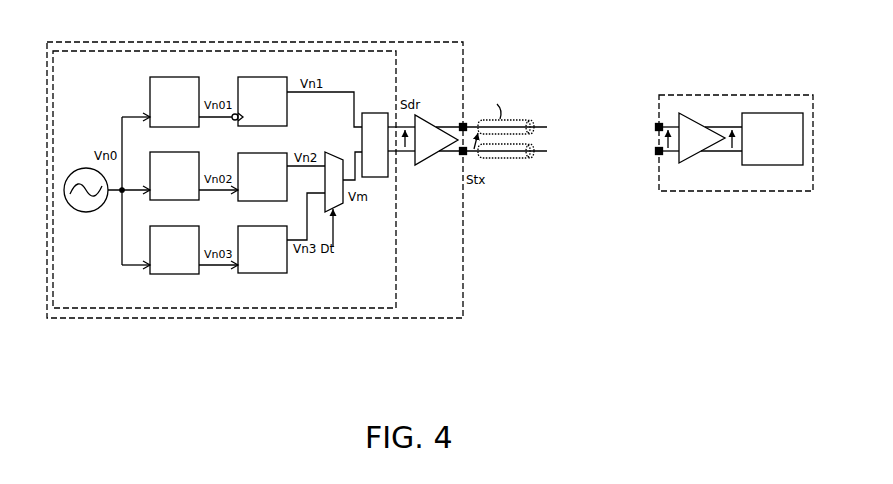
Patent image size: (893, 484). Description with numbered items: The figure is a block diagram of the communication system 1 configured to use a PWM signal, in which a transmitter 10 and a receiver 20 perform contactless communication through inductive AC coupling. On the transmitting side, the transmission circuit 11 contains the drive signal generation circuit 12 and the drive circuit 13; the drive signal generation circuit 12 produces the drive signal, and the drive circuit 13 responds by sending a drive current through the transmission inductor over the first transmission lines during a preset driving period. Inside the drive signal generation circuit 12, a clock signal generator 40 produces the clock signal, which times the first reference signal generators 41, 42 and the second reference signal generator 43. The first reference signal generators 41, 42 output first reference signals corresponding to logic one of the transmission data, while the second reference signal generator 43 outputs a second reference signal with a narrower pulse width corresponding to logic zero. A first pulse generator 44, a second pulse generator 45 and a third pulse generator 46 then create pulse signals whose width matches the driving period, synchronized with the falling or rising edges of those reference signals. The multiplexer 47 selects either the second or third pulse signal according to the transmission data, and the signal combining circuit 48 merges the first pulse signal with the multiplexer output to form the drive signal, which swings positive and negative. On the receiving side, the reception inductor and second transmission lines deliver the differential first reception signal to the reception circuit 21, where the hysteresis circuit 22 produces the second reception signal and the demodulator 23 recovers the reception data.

The communication system 1 is at (435, 396).
The transmitter 10 is at (506, 141).
The transmission circuit 11 is at (305, 42).
The drive signal generation circuit 12 is at (398, 284).
The drive circuit 13 is at (430, 156).
The receiver 20 is at (726, 162).
The reception circuit 21 is at (715, 95).
The hysteresis circuit 22 is at (684, 163).
The demodulator 23 is at (765, 165).
The clock signal generator 40 is at (83, 169).
The first reference signal generator 41 is at (149, 86).
The first reference signal generator 42 is at (149, 150).
The second reference signal generator 43 is at (149, 224).
The first pulse generator 44 is at (237, 86).
The second pulse generator 45 is at (237, 150).
The third pulse generator 46 is at (237, 224).
The multiplexer 47 is at (334, 152).
The signal combining circuit 48 is at (375, 113).